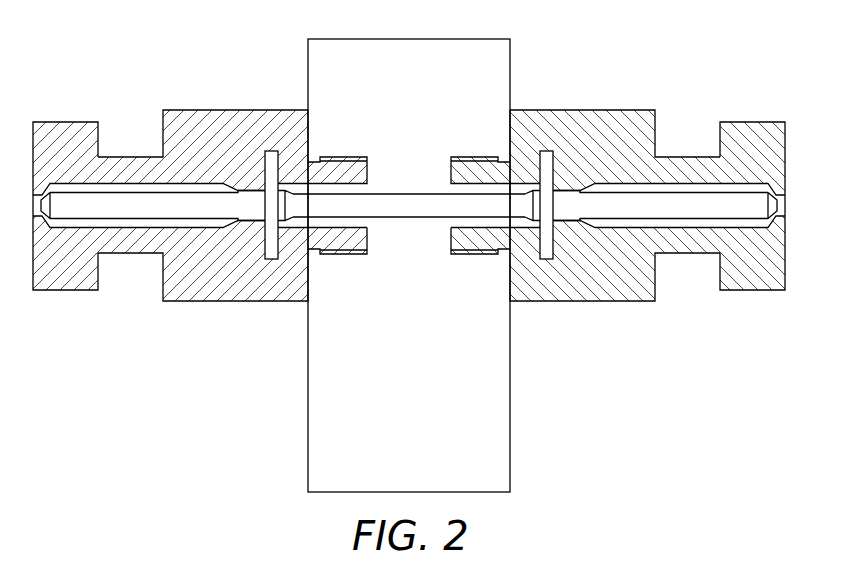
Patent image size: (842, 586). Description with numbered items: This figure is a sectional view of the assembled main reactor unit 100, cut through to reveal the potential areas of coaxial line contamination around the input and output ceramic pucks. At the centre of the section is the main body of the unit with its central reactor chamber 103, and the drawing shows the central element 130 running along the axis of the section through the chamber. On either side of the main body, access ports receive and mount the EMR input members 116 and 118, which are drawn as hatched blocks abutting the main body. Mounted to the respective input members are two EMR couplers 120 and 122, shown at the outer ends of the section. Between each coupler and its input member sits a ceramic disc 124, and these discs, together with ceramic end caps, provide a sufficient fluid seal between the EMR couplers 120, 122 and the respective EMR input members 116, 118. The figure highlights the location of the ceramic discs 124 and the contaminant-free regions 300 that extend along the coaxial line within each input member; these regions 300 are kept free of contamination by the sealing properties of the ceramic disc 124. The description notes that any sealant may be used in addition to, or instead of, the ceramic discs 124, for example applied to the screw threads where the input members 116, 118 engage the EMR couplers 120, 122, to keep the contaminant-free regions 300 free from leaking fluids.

The main reactor unit 100 is at (614, 66).
The central reactor chamber 103 is at (405, 183).
The EMR input member 116 is at (197, 290).
The EMR input member 118 is at (625, 288).
The EMR coupler 120 is at (66, 282).
The EMR coupler 122 is at (753, 282).
The ceramic disc 124 is at (272, 255).
The conductor rod 130 is at (411, 207).
The contaminant-free region 300 is at (130, 203).